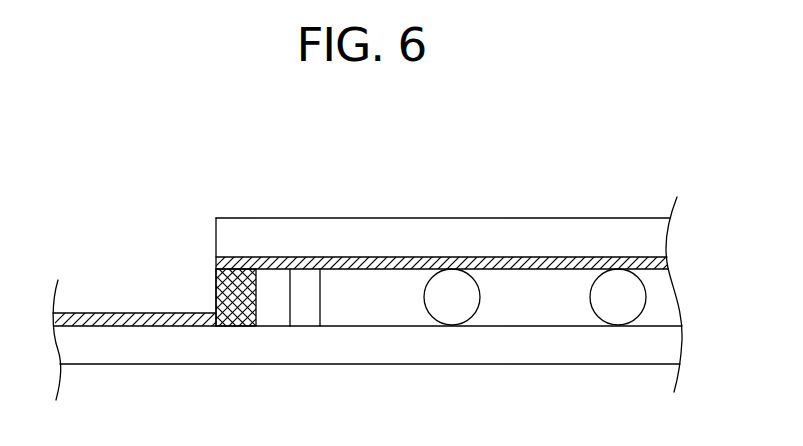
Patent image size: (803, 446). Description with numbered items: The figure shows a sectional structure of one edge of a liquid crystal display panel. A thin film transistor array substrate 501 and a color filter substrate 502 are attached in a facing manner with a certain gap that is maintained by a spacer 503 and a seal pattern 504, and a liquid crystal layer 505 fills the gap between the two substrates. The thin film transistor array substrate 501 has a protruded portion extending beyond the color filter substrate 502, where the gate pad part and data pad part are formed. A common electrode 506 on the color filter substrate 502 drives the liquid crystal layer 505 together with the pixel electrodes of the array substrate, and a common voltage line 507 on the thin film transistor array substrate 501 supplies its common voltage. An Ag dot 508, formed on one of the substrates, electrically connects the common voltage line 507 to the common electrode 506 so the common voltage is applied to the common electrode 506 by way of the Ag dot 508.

The thin film transistor array substrate 501 is at (550, 348).
The color filter substrate 502 is at (262, 238).
The spacer 503 is at (616, 308).
The seal pattern 504 is at (307, 310).
The liquid crystal layer 505 is at (520, 302).
The common electrode 506 is at (230, 263).
The common voltage line 507 is at (98, 318).
The Ag dot 508 is at (227, 292).